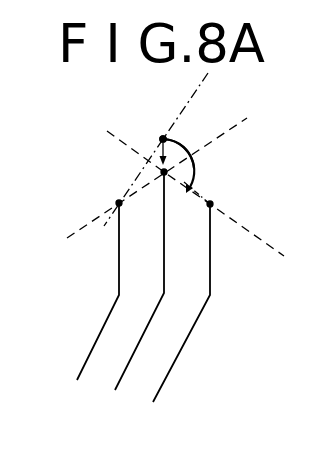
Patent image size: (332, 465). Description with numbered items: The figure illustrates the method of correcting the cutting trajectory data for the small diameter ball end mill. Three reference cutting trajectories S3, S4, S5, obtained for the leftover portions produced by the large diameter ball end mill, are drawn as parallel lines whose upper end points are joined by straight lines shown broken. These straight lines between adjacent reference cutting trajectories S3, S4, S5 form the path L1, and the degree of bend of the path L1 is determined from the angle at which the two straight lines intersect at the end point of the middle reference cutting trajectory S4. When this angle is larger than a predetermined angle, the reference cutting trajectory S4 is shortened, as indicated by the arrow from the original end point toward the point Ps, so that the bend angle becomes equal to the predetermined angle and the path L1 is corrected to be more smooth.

The path L1 is at (133, 183).
The sensing point Ps is at (164, 124).
The reference cutting trajectory S3 is at (88, 356).
The reference cutting trajectory S4 is at (127, 366).
The reference cutting trajectory S5 is at (168, 378).